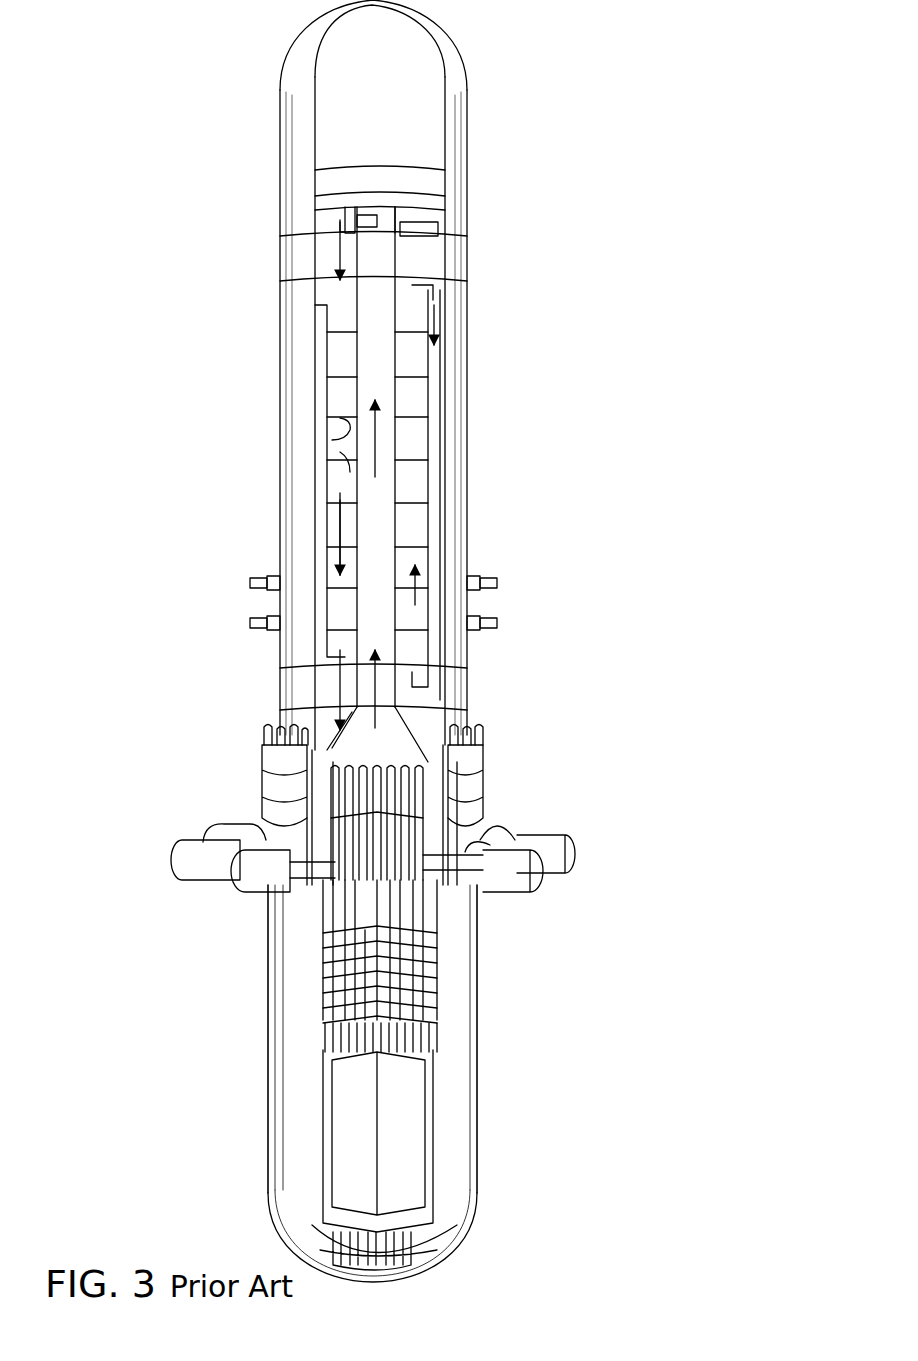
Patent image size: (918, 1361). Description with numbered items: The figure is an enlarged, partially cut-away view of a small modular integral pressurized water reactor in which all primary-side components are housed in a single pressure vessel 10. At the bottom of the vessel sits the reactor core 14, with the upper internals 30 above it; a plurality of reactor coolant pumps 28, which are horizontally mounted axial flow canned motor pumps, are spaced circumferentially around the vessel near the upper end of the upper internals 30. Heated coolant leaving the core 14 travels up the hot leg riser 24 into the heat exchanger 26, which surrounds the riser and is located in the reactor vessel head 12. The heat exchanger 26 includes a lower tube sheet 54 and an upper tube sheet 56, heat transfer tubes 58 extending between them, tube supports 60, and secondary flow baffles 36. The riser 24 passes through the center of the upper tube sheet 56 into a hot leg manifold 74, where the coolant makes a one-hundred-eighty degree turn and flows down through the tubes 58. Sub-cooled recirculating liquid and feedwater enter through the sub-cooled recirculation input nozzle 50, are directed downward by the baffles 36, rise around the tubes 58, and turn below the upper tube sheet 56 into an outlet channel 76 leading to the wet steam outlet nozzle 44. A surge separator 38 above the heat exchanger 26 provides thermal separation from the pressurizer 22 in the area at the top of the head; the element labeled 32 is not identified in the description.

The pressure vessel 10 is at (478, 1067).
The reactor vessel head 12 is at (480, 727).
The reactor core 14 is at (410, 1162).
The pressurizer 22 is at (420, 96).
The hot leg riser 24 is at (372, 535).
The heat exchanger 26 is at (418, 480).
The reactor coolant pumps 28 is at (568, 851).
The upper internals 30 is at (335, 985).
The baffle plate 32 is at (456, 221).
The secondary flow baffles 36 is at (437, 598).
The surge separator 38 is at (418, 198).
The wet steam outlet nozzle 44 is at (495, 585).
The sub-cooled recirculation input nozzle 50 is at (485, 630).
The lower tube sheet 54 is at (468, 690).
The upper tube sheet 56 is at (432, 258).
The heat transfer tubes 58 is at (342, 488).
The tube supports 60 is at (342, 460).
The hot leg manifold 74 is at (322, 228).
The outlet channel 76 is at (445, 525).